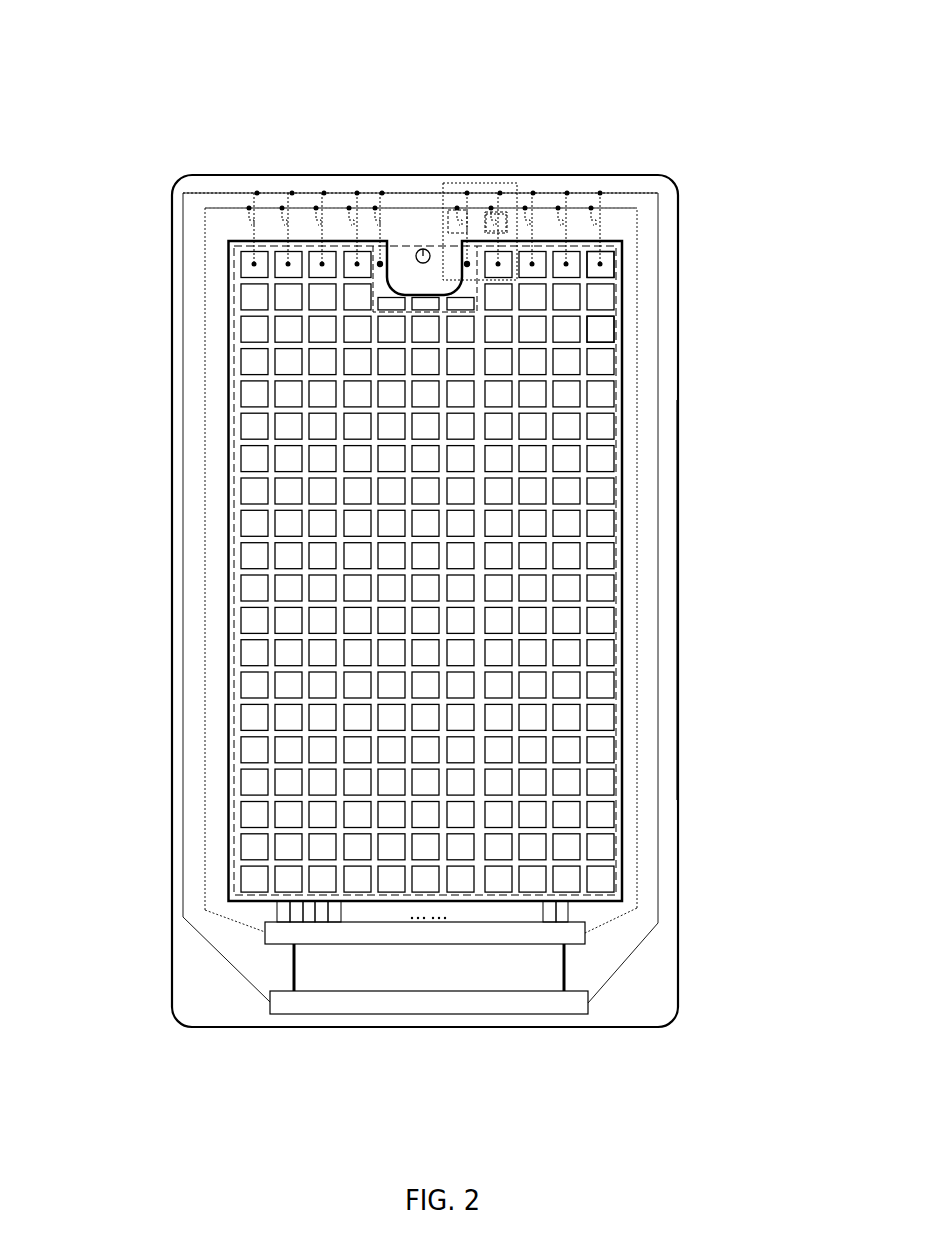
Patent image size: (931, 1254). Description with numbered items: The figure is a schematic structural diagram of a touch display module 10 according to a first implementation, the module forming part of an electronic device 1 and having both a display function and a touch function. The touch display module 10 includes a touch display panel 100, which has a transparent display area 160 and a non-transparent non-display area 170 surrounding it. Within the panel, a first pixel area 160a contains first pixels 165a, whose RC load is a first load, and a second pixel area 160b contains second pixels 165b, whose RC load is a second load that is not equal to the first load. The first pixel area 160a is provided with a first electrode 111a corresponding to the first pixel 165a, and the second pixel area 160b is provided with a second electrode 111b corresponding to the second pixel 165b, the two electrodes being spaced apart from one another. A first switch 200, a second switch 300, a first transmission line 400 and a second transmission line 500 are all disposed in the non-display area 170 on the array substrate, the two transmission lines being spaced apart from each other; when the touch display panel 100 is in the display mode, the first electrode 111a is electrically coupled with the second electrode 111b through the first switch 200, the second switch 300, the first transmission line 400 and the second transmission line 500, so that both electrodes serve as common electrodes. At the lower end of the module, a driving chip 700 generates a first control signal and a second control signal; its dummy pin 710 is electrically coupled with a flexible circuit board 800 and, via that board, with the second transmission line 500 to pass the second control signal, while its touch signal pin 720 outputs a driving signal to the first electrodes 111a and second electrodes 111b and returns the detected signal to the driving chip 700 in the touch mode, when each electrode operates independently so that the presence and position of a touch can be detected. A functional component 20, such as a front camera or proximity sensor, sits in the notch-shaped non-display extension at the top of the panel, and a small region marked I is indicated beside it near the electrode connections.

The electronic device 1 is at (422, 48).
The touch display module 10 is at (150, 164).
The functional component 20 is at (423, 249).
The touch display panel 100 is at (197, 362).
The first electrode 111a is at (380, 262).
The second electrode 111b is at (605, 258).
The display area 160 is at (613, 782).
The first pixel area 160a is at (476, 280).
The second pixel area 160b is at (598, 347).
The first pixel 165a is at (467, 261).
The second pixel 165b is at (605, 270).
The non-display area 170 is at (663, 713).
The first switch 200 is at (450, 215).
The second switch 300 is at (503, 210).
The first transmission line 400 is at (638, 475).
The second transmission line 500 is at (658, 517).
The driving chip 700 is at (272, 947).
The dummy pin 710 is at (297, 963).
The touch signal pin 720 is at (275, 915).
The flexible circuit board 800 is at (288, 1014).
The region I is at (493, 187).